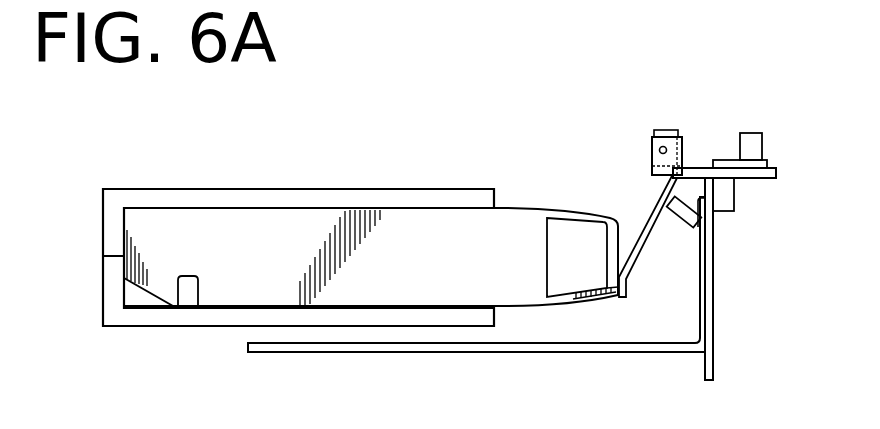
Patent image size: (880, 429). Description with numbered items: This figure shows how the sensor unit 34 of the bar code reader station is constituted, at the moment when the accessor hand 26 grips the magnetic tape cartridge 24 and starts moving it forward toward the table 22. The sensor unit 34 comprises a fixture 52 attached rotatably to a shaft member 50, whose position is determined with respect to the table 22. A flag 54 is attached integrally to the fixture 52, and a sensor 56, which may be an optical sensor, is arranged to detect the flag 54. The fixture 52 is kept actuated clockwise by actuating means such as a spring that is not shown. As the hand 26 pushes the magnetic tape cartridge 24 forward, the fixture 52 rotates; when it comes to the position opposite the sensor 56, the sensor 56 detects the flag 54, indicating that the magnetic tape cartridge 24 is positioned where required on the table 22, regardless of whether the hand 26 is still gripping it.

The table 22 is at (392, 352).
The magnetic tape cartridge 24 is at (361, 208).
The hand 26 is at (258, 191).
The sensor unit 34 is at (705, 130).
The shaft member 50 is at (660, 149).
The fixture 52 is at (647, 232).
The flag 54 is at (682, 218).
The sensor 56 is at (728, 202).